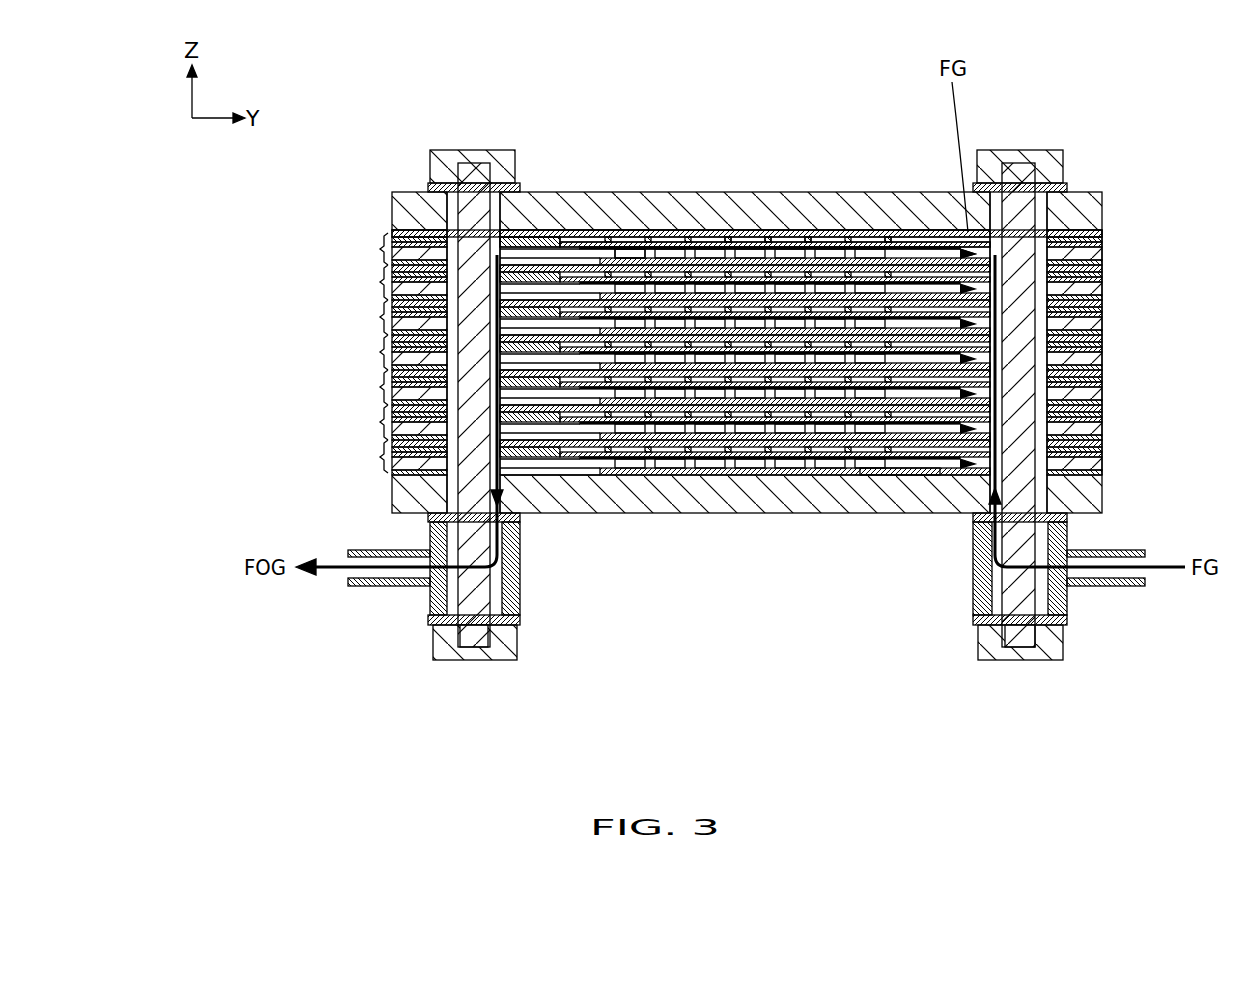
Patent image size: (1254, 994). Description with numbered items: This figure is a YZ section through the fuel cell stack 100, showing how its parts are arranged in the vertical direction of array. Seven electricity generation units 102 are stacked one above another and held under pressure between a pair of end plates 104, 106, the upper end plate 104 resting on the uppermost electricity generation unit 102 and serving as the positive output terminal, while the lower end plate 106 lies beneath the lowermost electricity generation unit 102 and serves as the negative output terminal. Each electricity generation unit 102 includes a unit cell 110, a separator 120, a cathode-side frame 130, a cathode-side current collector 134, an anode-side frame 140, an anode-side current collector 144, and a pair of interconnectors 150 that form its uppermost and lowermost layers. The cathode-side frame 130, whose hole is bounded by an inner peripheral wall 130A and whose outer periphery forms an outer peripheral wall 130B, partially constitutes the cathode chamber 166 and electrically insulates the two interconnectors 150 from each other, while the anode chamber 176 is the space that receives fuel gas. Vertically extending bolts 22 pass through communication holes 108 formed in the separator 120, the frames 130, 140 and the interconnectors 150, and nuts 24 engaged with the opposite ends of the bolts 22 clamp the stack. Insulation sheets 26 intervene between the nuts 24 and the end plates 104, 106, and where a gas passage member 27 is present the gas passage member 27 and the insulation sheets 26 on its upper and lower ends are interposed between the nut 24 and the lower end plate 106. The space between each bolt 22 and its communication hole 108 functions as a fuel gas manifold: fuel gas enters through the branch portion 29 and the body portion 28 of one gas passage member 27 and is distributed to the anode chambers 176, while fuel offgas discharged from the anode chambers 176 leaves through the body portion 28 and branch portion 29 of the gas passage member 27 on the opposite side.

The fuel cell stack 100 is at (1148, 280).
The electricity generation unit 102 is at (378, 457).
The end plate 104 is at (388, 232).
The end plate 106 is at (392, 489).
The communication hole 108 is at (400, 214).
The unit cell 110 is at (770, 232).
The separator 120 is at (567, 242).
The cathode-side frame 130 is at (518, 232).
The inner peripheral wall 130A is at (897, 478).
The outer peripheral wall 130B is at (1105, 462).
The cathode-side current collector 134 is at (815, 232).
The anode-side frame 140 is at (545, 245).
The anode-side current collector 144 is at (745, 232).
The interconnector 150 is at (592, 260).
The cathode chamber 166 is at (915, 237).
The anode chamber 176 is at (892, 240).
The bolt 22 is at (455, 212).
The nut 24 is at (432, 155).
The insulation sheet 26 is at (428, 186).
The gas passage member 27 is at (747, 610).
The body portion 28 is at (430, 600).
The branch portion 29 is at (365, 586).